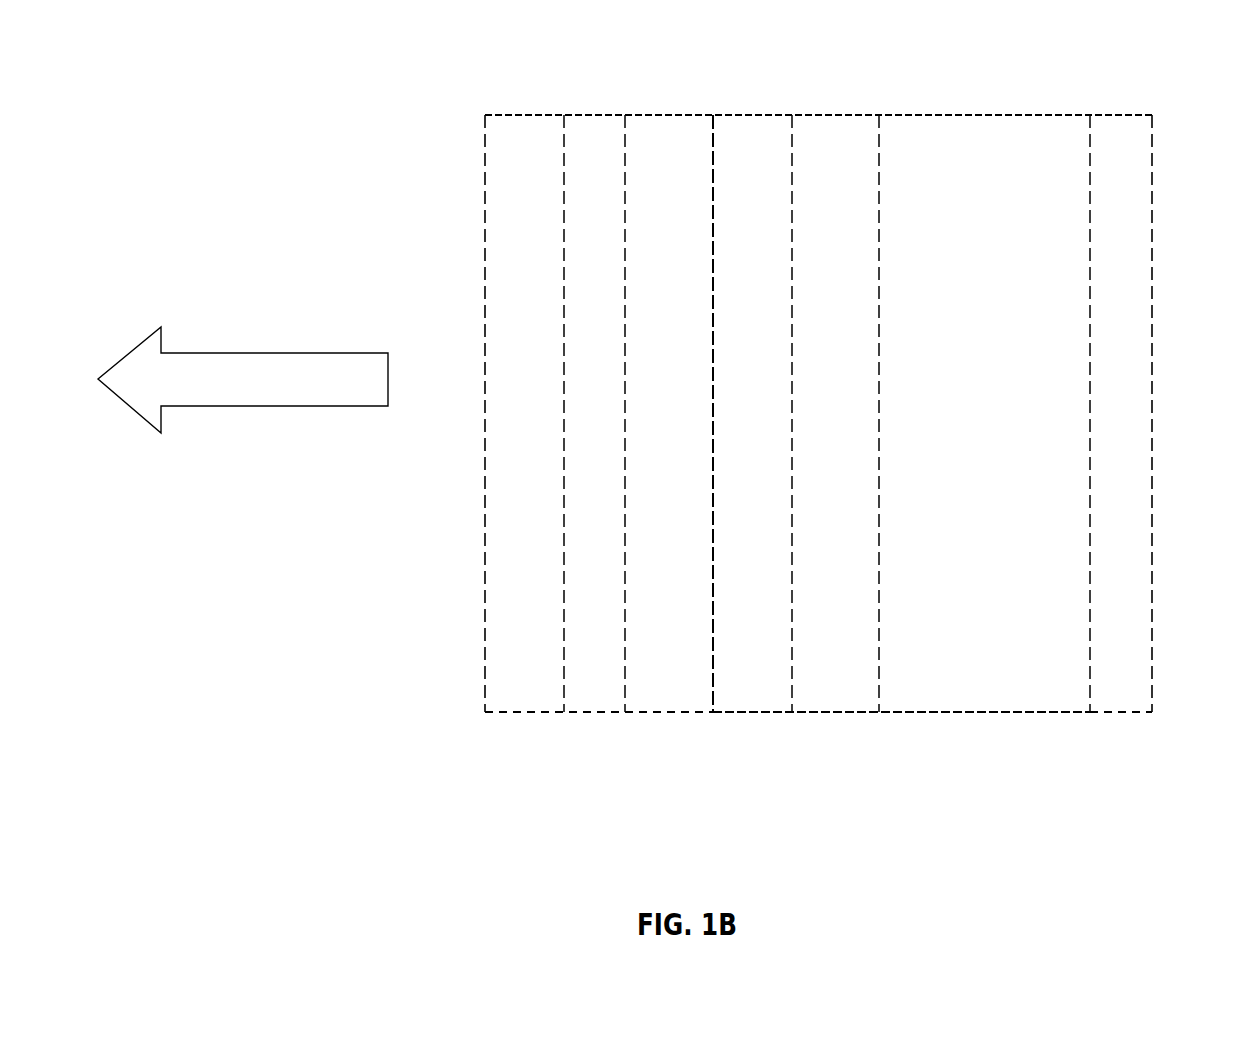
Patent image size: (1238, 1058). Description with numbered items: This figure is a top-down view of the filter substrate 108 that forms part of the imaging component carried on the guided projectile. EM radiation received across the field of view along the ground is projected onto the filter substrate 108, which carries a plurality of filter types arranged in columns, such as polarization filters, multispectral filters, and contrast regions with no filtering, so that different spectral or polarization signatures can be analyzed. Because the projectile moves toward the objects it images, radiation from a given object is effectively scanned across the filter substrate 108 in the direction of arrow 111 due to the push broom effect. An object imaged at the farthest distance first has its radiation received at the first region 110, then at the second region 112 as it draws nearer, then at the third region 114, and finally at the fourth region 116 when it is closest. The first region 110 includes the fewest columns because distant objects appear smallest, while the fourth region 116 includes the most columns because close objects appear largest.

The filter substrate 108 is at (982, 83).
The first region 110 is at (1129, 133).
The arrow 111 is at (252, 353).
The second region 112 is at (830, 133).
The third region 114 is at (674, 133).
The fourth region 116 is at (513, 133).